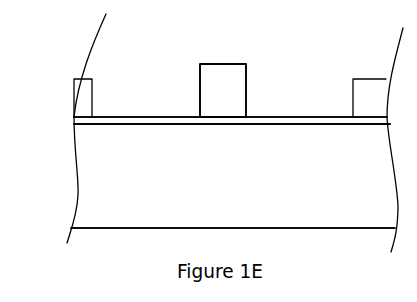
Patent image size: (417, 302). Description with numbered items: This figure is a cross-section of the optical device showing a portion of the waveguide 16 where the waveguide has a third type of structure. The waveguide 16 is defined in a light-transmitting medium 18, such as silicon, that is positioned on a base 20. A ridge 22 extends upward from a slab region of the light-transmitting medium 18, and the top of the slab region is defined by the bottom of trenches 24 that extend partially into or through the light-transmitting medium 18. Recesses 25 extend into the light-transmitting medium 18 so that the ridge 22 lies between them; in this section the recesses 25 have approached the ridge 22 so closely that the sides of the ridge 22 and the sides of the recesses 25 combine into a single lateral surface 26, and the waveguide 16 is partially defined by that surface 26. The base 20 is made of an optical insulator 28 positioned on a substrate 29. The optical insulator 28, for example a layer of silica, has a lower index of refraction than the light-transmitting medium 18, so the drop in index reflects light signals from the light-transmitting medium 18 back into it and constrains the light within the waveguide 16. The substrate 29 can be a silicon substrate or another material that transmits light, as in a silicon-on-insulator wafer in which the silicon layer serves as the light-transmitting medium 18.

The waveguide 16 is at (250, 64).
The light-transmitting medium 18 is at (82, 88).
The base 20 is at (50, 117).
The ridge 22 is at (208, 63).
The trenches 24 is at (372, 78).
The recesses 25 is at (118, 119).
The lateral surface 26 is at (242, 93).
The optical insulator 28 is at (153, 125).
The substrate 29 is at (332, 218).